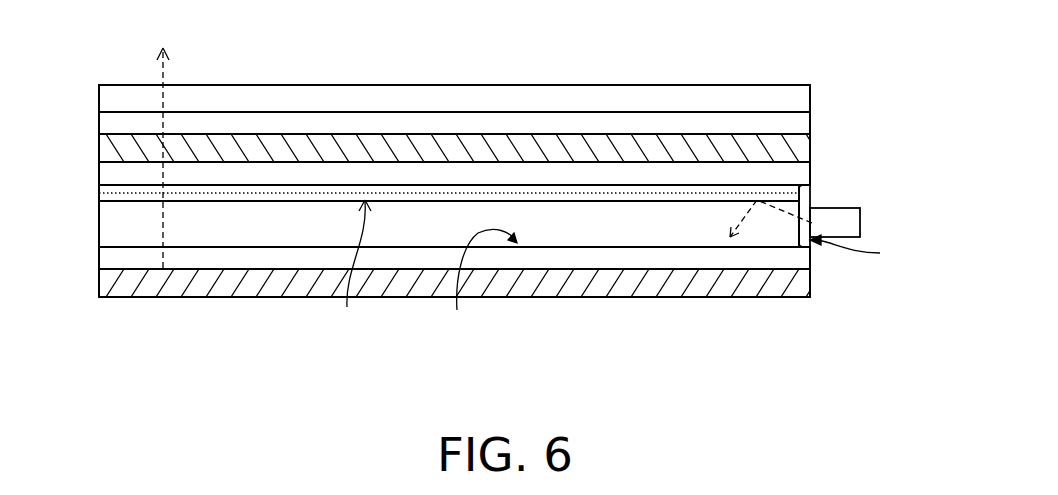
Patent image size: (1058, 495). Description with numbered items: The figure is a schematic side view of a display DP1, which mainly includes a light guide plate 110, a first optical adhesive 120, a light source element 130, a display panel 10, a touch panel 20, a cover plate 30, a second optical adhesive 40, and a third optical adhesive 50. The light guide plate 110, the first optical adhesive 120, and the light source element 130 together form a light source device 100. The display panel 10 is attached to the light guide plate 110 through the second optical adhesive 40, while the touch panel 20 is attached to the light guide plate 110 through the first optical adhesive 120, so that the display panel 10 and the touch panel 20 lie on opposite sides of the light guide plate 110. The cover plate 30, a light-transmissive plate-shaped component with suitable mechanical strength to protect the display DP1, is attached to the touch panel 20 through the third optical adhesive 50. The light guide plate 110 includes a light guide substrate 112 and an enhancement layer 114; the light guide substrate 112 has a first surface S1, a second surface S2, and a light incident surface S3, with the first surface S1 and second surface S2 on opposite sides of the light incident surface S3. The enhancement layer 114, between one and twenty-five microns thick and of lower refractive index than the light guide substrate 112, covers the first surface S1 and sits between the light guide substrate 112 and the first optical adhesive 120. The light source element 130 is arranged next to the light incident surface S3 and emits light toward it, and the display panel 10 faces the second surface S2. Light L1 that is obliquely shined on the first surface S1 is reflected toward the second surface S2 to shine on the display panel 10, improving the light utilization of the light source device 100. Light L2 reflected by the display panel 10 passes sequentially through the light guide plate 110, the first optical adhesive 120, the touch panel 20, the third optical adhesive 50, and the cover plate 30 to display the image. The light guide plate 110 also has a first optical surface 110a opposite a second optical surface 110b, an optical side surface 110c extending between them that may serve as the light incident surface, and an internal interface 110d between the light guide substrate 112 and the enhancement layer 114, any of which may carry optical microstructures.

The display panel 10 is at (803, 283).
The touch panel 20 is at (802, 145).
The cover plate 30 is at (795, 93).
The second optical adhesive 40 is at (803, 257).
The third optical adhesive 50 is at (803, 120).
The light source device 100 is at (502, 205).
The light guide plate 110 is at (479, 205).
The first optical surface 110a is at (438, 178).
The second optical surface 110b is at (412, 247).
The optical side surface 110c is at (99, 185).
The internal interface 110d is at (282, 200).
The light guide substrate 112 is at (806, 206).
The enhancement layer 114 is at (810, 187).
The first optical adhesive 120 is at (803, 177).
The light source element 130 is at (862, 218).
The first surface S1 is at (353, 268).
The second surface S2 is at (482, 283).
The light incident surface S3 is at (858, 251).
The light L1 is at (745, 215).
The light L2 is at (166, 73).
The display DP1 is at (881, 383).